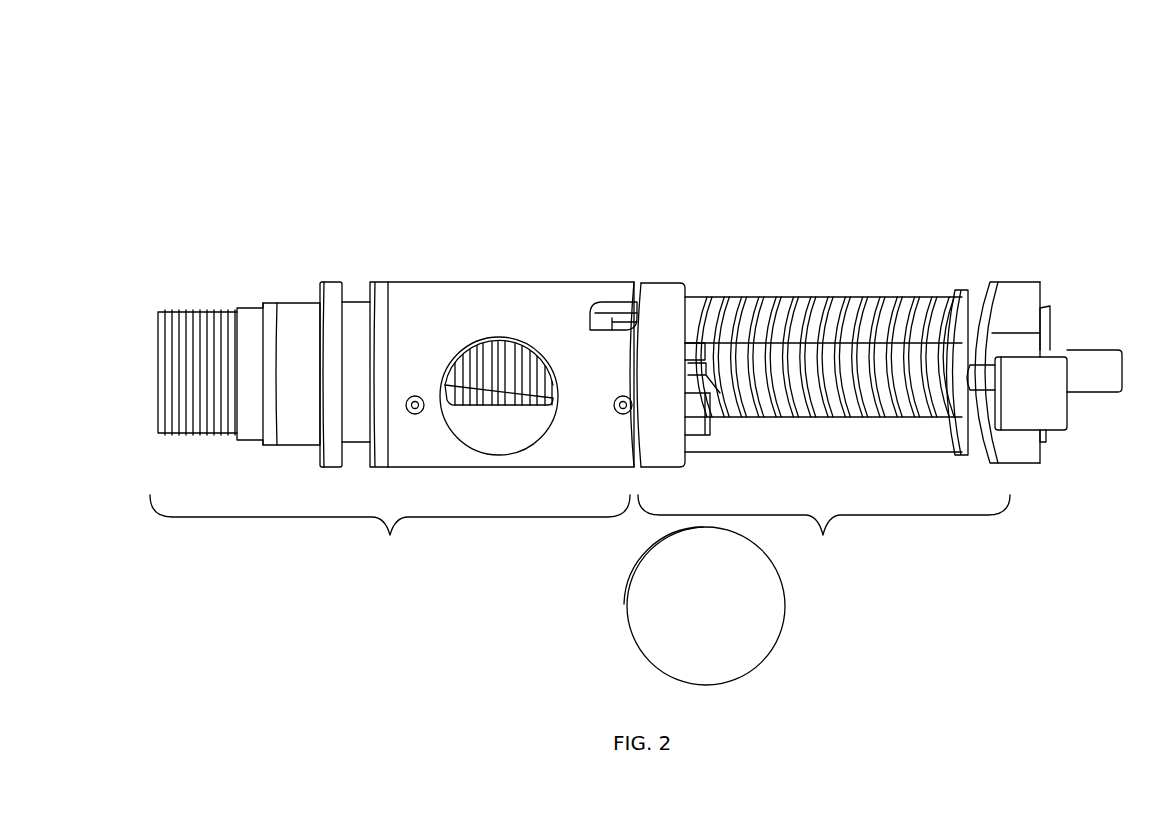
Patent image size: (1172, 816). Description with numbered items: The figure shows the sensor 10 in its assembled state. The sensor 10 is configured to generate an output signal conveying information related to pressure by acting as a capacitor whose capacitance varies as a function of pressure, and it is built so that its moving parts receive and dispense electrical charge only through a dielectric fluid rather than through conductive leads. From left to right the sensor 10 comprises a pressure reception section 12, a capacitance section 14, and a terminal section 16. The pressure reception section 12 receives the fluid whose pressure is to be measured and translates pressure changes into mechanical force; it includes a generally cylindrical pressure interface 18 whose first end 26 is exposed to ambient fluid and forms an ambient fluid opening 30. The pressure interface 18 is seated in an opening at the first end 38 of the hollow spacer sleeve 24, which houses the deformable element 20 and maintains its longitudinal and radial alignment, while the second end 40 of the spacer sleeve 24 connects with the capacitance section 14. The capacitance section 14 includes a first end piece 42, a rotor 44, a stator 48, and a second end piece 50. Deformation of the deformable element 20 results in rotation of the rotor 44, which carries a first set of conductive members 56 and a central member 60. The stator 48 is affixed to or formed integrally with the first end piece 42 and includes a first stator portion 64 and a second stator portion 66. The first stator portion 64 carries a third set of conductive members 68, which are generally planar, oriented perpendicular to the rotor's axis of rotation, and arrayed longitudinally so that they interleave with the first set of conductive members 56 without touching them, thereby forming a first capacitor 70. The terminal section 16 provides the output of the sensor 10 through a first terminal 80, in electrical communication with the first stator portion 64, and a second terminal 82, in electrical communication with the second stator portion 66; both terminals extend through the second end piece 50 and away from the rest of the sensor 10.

The sensor 10 is at (908, 104).
The pressure reception section 12 is at (390, 531).
The capacitance section 14 is at (824, 531).
The terminal section 16 is at (1070, 301).
The pressure interface 18 is at (302, 306).
The deformable element 20 is at (488, 355).
The spacer sleeve 24 is at (418, 292).
The first end 26 is at (162, 330).
The ambient fluid opening 30 is at (157, 372).
The first end 38 is at (378, 292).
The second end 40 is at (636, 288).
The first end piece 42 is at (663, 296).
The rotor 44 is at (995, 432).
The stator 48 is at (693, 306).
The second end piece 50 is at (1005, 290).
The first set of conductive members 56 is at (765, 372).
The central member 60 is at (686, 370).
The first stator portion 64 is at (972, 305).
The second stator portion 66 is at (860, 437).
The third set of conductive members 68 is at (905, 305).
The first capacitor 70 is at (825, 300).
The first terminal 80 is at (1050, 333).
The second terminal 82 is at (1056, 445).